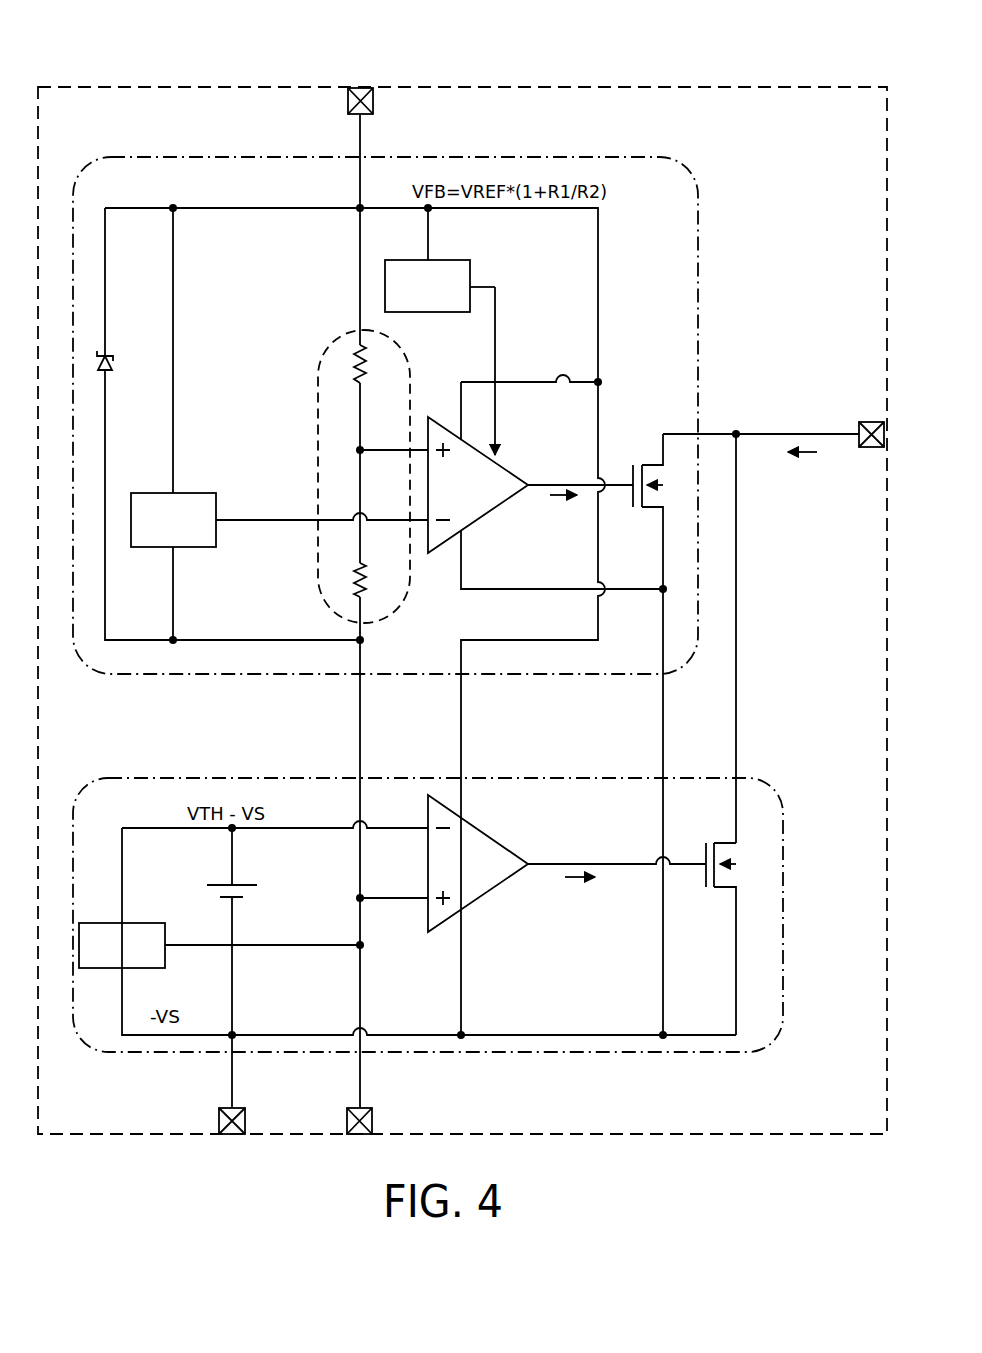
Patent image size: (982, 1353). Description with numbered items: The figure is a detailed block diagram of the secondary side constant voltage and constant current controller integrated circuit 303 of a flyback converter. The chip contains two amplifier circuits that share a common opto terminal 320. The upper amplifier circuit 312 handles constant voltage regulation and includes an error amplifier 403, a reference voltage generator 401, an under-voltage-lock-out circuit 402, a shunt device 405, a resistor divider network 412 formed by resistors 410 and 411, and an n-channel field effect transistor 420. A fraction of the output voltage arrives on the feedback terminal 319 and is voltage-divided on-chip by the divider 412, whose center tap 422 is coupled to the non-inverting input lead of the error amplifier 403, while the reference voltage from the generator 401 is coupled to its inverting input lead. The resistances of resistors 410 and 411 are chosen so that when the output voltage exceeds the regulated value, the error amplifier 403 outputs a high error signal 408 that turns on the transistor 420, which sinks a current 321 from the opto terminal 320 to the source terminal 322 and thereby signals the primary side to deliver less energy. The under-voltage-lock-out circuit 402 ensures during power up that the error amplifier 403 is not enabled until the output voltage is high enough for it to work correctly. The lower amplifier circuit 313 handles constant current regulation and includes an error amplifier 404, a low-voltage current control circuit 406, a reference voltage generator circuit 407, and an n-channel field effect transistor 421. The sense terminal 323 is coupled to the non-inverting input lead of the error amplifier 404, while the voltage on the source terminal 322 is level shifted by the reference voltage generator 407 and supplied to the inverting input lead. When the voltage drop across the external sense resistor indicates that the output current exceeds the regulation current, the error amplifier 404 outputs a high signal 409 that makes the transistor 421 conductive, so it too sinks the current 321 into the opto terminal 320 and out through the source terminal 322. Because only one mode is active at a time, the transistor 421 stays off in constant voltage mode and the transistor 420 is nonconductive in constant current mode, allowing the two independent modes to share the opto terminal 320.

The secondary side constant voltage and constant current controller integrated circu 303 is at (240, 86).
The feedback terminal FB 319 is at (374, 101).
The amplifier circuit 312 is at (699, 238).
The under-voltage-lock-out (UVLO) circuit 402 is at (463, 259).
The shunt device 405 is at (111, 376).
The reference voltage generator 401 is at (200, 492).
The resistor divider network 412 is at (318, 396).
The resistor 410 is at (367, 361).
The resistor 411 is at (366, 569).
The center tap 422 is at (364, 447).
The error amplifier 403 is at (489, 514).
The error signal 408 is at (563, 498).
The N-channel field effect transistor (NFET) 420 is at (651, 509).
The OPTO terminal 320 is at (870, 421).
The current 321 is at (805, 457).
The amplifier circuit 313 is at (784, 937).
The reference voltage generator circuit 407 is at (229, 883).
The low-voltage current control (LVCC) circuit 406 is at (152, 922).
The error amplifier 404 is at (491, 890).
The high signal 409 is at (580, 882).
The NFET 421 is at (717, 890).
The SOURCE terminal 322 is at (219, 1120).
The SENSE terminal 323 is at (373, 1119).